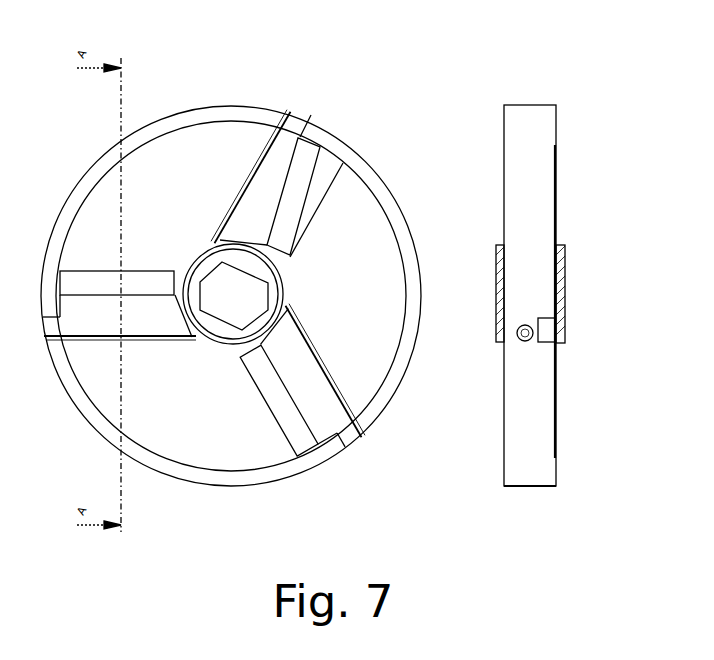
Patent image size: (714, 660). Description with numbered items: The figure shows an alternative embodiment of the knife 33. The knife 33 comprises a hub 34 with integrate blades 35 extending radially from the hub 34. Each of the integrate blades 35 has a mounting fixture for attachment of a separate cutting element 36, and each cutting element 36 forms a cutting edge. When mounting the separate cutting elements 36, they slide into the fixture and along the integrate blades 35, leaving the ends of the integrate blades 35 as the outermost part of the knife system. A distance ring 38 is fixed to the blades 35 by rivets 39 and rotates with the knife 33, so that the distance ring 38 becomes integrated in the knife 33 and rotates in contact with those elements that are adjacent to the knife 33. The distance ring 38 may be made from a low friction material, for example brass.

The knife 33 is at (366, 121).
The hub 34 is at (258, 268).
The integrate blades 35 is at (265, 178).
The separate cutting elements 36 is at (280, 227).
The distance ring 38 is at (517, 165).
The rivets 39 is at (517, 337).